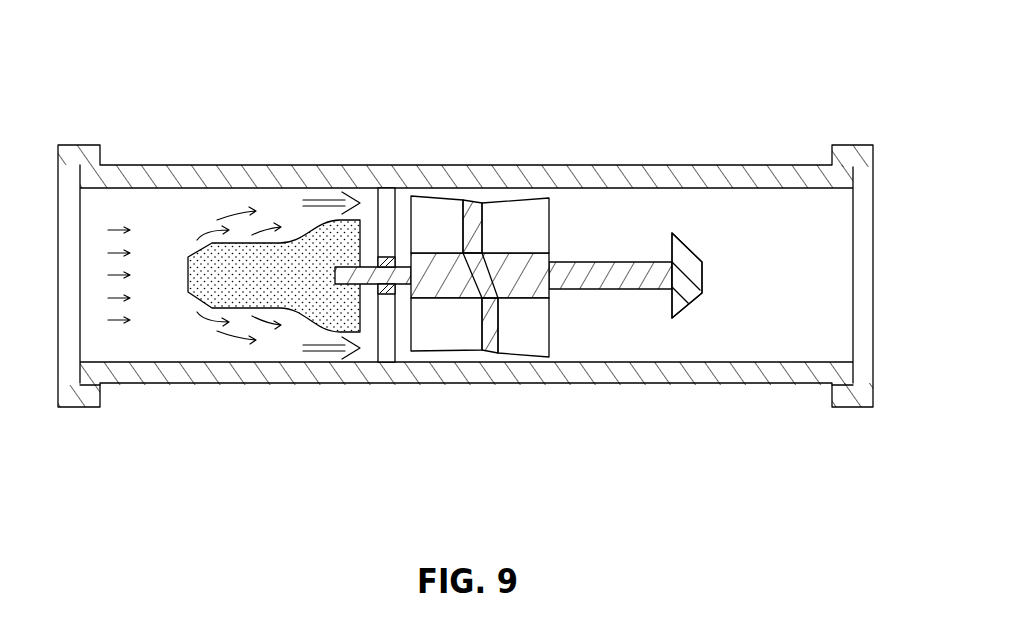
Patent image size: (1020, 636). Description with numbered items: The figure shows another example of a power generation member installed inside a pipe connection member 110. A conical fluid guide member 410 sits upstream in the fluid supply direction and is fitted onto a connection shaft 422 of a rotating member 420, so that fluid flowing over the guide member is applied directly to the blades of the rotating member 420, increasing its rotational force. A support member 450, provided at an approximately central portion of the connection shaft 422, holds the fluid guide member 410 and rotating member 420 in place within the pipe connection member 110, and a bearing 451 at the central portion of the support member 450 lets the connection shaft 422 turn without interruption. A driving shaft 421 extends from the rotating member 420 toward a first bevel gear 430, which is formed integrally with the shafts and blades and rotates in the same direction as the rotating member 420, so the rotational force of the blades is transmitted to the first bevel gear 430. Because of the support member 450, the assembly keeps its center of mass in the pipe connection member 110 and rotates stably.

The pipe connection member 110 is at (680, 105).
The fluid guide member 410 is at (300, 312).
The rotating member 420 is at (452, 318).
The driving shaft 421 is at (610, 290).
The connection shaft 422 is at (366, 265).
The first bevel gear 430 is at (693, 298).
The support member 450 is at (387, 348).
The bearing 451 is at (381, 262).